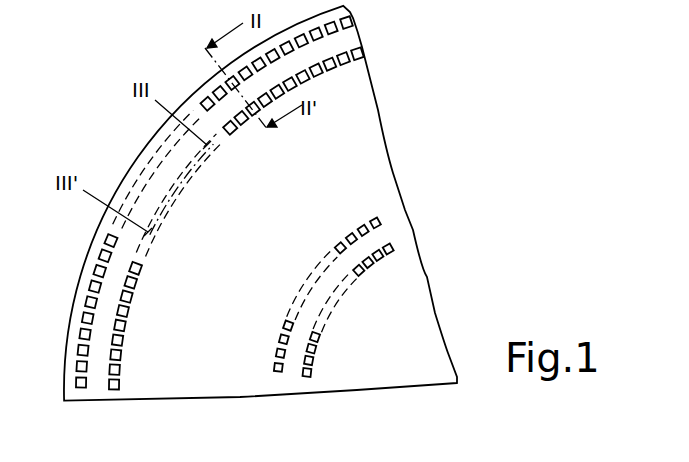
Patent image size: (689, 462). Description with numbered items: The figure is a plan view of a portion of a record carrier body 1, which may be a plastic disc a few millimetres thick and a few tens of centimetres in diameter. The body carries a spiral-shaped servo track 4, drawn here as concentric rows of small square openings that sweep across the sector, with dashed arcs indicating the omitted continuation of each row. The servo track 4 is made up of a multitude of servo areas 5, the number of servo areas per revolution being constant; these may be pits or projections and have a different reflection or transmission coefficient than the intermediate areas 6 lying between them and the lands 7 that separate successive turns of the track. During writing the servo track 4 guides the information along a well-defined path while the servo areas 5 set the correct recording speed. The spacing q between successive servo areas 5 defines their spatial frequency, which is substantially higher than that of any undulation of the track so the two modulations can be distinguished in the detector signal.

The record carrier body 1 is at (447, 181).
The servo track 4 is at (122, 220).
The servo areas 5 is at (333, 55).
The intermediate areas 6 is at (317, 76).
The lands 7 is at (93, 378).
The spacing of the servo areas q is at (120, 338).